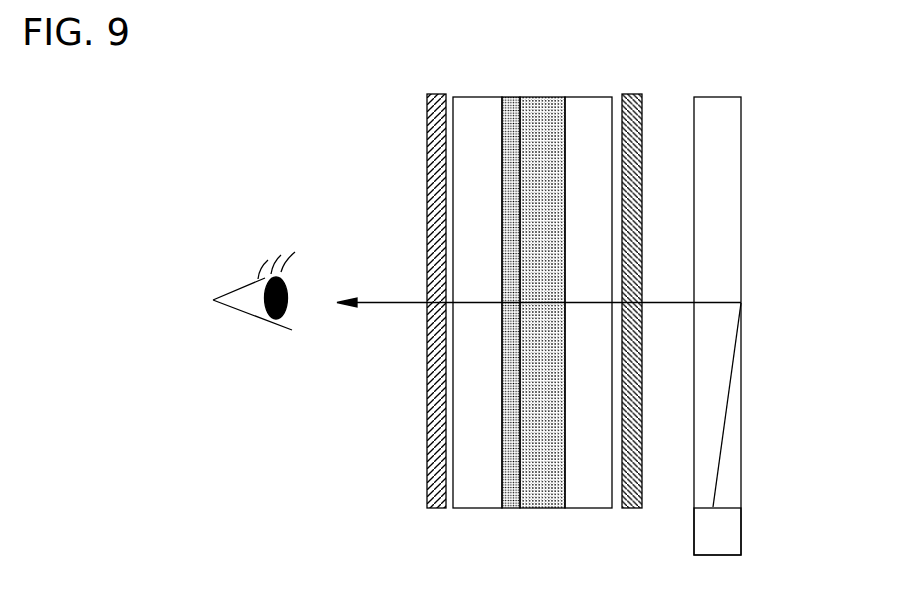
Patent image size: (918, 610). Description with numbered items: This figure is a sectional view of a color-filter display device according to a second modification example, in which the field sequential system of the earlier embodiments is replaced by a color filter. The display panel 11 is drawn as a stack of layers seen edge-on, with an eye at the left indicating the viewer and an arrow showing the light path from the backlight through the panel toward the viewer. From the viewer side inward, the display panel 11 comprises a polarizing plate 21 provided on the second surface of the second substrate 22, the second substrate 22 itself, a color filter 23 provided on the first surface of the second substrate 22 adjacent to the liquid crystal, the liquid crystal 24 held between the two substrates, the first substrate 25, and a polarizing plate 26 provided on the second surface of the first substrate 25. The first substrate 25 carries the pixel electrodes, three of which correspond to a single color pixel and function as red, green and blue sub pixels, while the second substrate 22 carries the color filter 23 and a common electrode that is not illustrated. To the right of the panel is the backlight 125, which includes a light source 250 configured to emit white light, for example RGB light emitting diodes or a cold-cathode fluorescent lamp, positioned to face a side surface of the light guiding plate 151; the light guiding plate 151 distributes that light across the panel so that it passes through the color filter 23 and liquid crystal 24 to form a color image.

The display panel 11 is at (427, 87).
The polarizing plate 21 is at (433, 510).
The second substrate 22 is at (477, 510).
The color filter 23 is at (510, 510).
The liquid crystal 24 is at (542, 510).
The first substrate 25 is at (587, 510).
The polarizing plate 26 is at (630, 510).
The backlight 125 is at (741, 89).
The light guiding plate 151 is at (741, 418).
The light source 250 is at (741, 530).